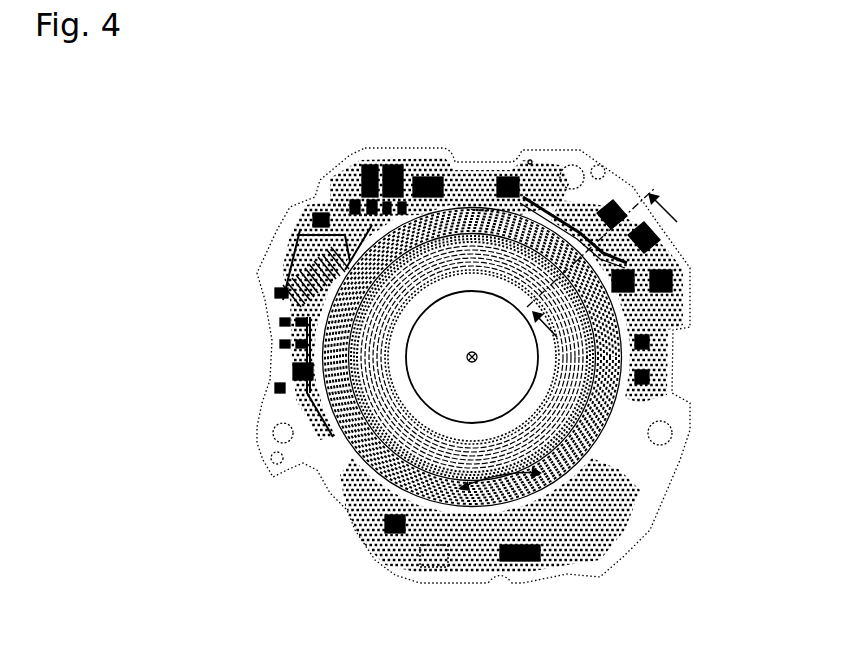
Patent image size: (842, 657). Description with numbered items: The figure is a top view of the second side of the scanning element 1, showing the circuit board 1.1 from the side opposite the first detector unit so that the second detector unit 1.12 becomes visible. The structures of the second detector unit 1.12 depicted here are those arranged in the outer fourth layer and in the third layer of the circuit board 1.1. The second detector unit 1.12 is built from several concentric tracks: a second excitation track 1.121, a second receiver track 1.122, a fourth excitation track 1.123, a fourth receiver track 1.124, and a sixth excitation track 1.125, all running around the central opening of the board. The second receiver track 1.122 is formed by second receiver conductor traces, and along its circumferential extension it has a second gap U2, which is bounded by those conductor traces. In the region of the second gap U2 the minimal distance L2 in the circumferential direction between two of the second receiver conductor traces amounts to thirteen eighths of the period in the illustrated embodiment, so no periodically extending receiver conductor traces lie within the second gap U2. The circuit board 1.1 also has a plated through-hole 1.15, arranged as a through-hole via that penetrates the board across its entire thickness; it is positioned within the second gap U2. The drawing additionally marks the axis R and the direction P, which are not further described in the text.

The scanning element 1 is at (303, 168).
The circuit board 1.1 is at (281, 245).
The second detector unit 1.12 is at (326, 331).
The second excitation track 1.121 is at (330, 377).
The second receiver track 1.122 is at (604, 335).
The fourth excitation track 1.123 is at (400, 423).
The fourth receiver track 1.124 is at (582, 376).
The sixth excitation track 1.125 is at (398, 428).
The plated through-hole 1.15 is at (483, 612).
The axis of rotation R is at (468, 356).
The minimal distance L2 is at (565, 595).
The direction P is at (605, 274).
The second gap U2 is at (566, 596).